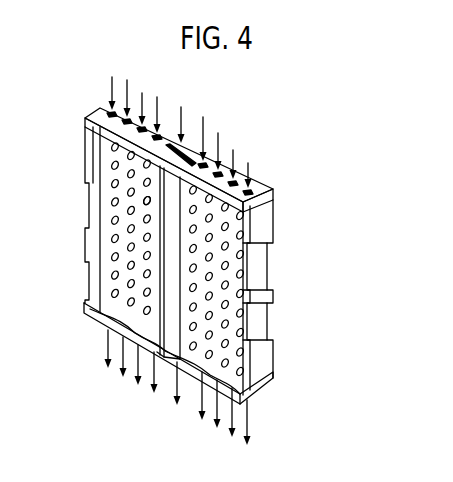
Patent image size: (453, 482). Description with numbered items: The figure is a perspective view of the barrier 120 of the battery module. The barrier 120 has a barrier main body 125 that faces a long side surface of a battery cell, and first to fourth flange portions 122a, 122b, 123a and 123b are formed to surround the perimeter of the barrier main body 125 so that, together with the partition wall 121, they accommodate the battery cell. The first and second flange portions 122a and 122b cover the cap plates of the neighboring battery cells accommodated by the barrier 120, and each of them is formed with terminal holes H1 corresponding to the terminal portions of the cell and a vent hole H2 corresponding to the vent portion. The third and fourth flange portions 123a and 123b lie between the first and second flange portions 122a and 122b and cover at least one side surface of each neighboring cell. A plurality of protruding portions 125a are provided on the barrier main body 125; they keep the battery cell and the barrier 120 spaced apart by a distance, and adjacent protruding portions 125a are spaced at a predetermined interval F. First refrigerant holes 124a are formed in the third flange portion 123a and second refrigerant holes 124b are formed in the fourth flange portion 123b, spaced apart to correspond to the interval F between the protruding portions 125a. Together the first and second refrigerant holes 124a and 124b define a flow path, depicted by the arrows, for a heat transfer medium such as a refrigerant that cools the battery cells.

The barrier 120 is at (72, 107).
The partition wall 121 is at (163, 142).
The first flange portion 122a is at (90, 165).
The second flange portion 122b is at (291, 297).
The third flange portion 123a is at (126, 116).
The first refrigerant holes 124a is at (110, 110).
The barrier main body 125 is at (135, 251).
The protruding portions 125a is at (113, 149).
The interval F is at (140, 208).
The terminal holes H1 is at (272, 215).
The vent hole H2 is at (270, 290).
The fourth flange portion 123b is at (202, 374).
The second refrigerant holes 124b is at (232, 396).